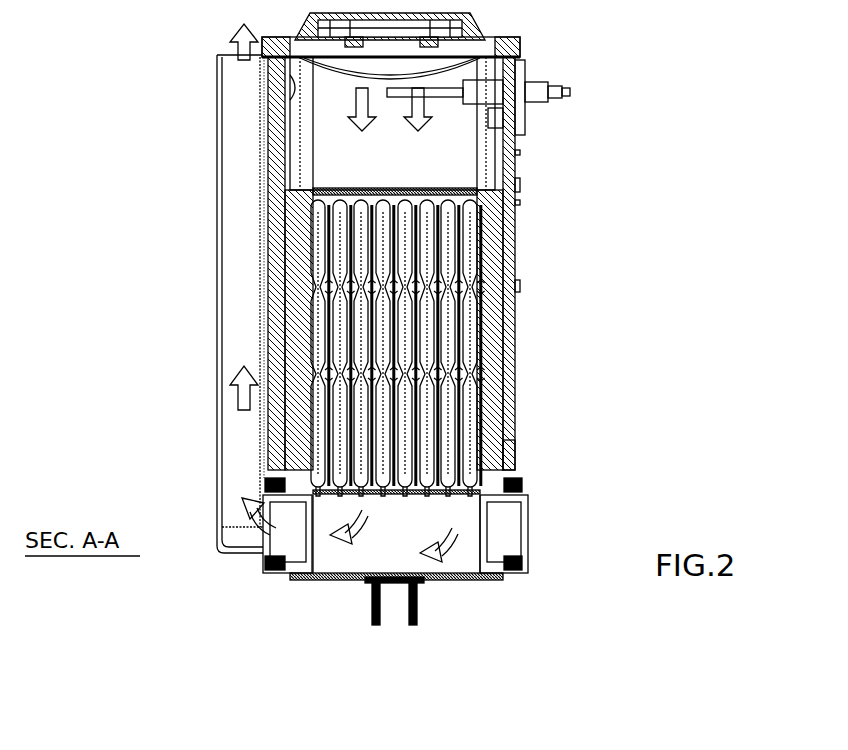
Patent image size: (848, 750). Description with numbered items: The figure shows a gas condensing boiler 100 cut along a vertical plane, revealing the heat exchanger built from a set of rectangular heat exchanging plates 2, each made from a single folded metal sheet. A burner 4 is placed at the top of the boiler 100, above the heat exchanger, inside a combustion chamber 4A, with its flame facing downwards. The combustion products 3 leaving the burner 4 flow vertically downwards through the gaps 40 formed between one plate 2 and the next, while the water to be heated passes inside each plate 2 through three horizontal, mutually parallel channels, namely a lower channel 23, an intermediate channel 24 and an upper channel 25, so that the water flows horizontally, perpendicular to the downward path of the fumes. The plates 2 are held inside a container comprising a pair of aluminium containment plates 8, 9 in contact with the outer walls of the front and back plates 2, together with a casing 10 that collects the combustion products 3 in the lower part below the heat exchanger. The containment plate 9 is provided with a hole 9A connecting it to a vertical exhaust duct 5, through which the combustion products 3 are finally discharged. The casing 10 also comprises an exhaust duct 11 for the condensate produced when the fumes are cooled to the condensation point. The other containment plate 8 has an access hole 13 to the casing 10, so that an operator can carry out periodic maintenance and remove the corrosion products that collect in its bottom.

The gas condensing boiler 100 is at (442, 320).
The plate 2 is at (515, 208).
The combustion products 3 is at (275, 138).
The burner 4 is at (270, 110).
The combustion chamber 4A is at (445, 160).
The exhaust duct 5 is at (240, 447).
The containment plate 8 is at (515, 310).
The containment plate 9 is at (270, 262).
The hole 9A is at (275, 533).
The casing 10 is at (325, 577).
The exhaust duct 11 is at (418, 620).
The access hole 13 is at (460, 381).
The lower channel 23 is at (515, 455).
The intermediate channel 24 is at (470, 340).
The channel 25 is at (520, 245).
The gap 40 is at (275, 185).